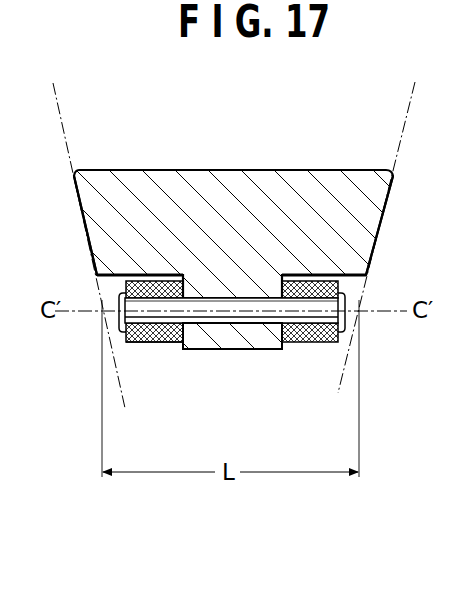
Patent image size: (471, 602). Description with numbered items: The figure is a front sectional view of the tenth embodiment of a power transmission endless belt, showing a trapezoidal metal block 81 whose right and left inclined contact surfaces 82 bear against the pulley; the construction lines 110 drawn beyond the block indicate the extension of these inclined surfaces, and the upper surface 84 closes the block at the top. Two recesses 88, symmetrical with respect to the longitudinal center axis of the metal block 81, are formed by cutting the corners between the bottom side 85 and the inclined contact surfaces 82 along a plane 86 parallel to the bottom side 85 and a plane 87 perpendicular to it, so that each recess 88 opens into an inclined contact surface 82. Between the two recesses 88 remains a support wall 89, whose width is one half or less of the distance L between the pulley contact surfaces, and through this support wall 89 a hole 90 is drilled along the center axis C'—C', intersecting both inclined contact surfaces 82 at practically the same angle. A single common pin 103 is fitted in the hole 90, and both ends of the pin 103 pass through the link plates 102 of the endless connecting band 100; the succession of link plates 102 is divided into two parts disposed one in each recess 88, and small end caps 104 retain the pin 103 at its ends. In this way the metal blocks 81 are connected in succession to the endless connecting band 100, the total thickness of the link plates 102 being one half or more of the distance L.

The metal block 81 is at (221, 166).
The top surface of body 84 is at (308, 169).
The inclined contact surfaces 82 is at (82, 218).
The extension line of inclined surface 110 is at (68, 136).
The recesses 88 is at (119, 291).
The plane 86 is at (118, 278).
The link plates 102 is at (315, 345).
The endless connecting band 100 is at (152, 354).
The hole 90 is at (220, 299).
The pin 103 is at (255, 297).
The pin end cap 104 is at (120, 323).
The bottom side 85 is at (208, 350).
The support wall 89 is at (247, 350).
The plane 87 is at (272, 350).